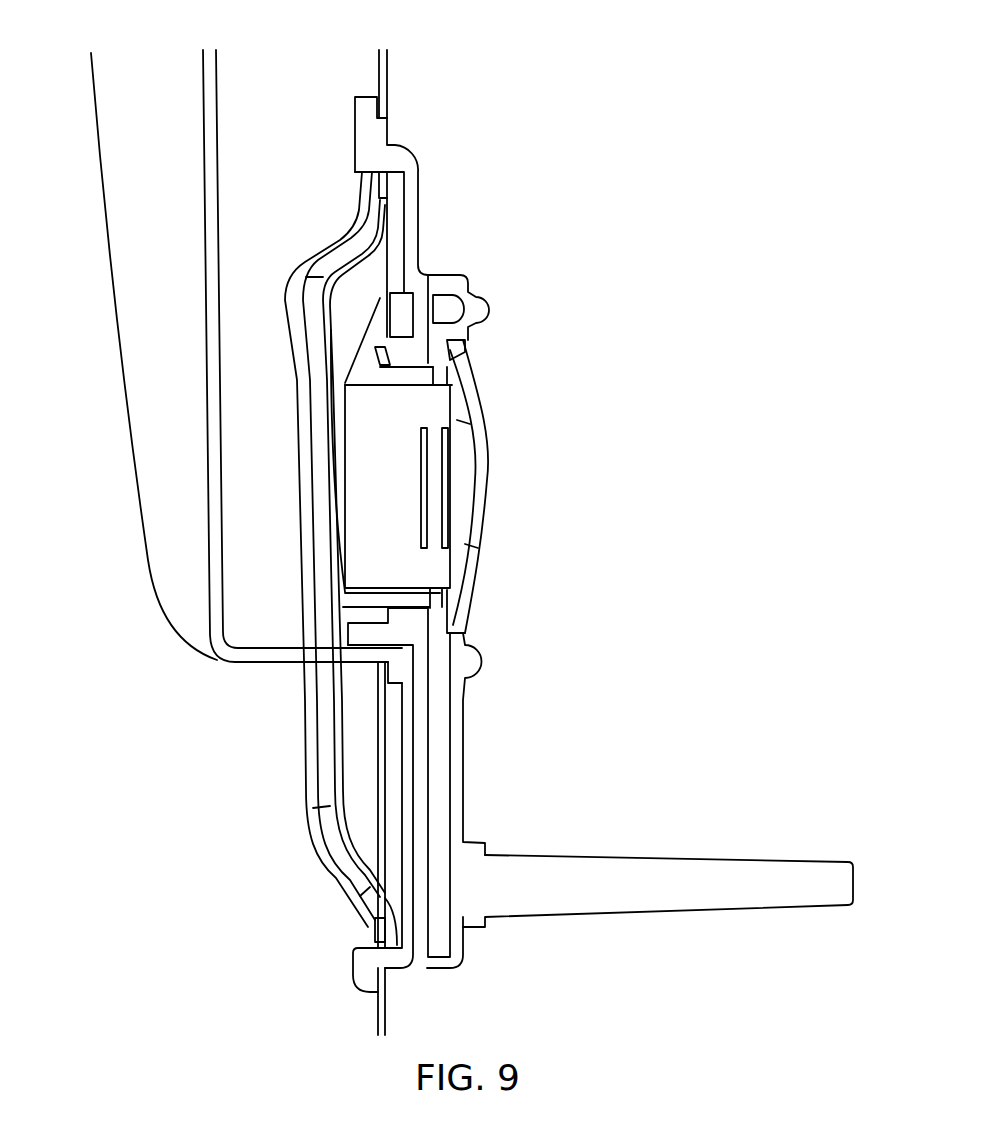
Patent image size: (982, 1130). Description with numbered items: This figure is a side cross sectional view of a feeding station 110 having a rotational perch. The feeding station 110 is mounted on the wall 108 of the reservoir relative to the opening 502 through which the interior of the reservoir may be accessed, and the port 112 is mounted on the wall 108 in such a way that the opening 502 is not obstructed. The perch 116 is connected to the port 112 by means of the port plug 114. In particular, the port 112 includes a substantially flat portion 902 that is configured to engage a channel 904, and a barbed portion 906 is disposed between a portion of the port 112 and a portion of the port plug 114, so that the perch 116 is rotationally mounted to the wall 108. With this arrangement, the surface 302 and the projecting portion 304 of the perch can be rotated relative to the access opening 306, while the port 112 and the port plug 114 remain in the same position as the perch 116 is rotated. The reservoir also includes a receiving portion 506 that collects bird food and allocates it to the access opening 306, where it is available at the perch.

The wall 108 is at (387, 90).
The feeding station 110 is at (708, 300).
The port 112 is at (419, 171).
The port plug 114 is at (477, 562).
The perch 116 is at (658, 680).
The surface 302 is at (465, 723).
The projecting portion 304 is at (570, 915).
The access opening 306 is at (508, 478).
The opening 502 is at (383, 420).
The receiving portion 506 is at (210, 592).
The flat portion 902 is at (410, 367).
The channel 904 is at (450, 352).
The barbed portion 906 is at (478, 325).